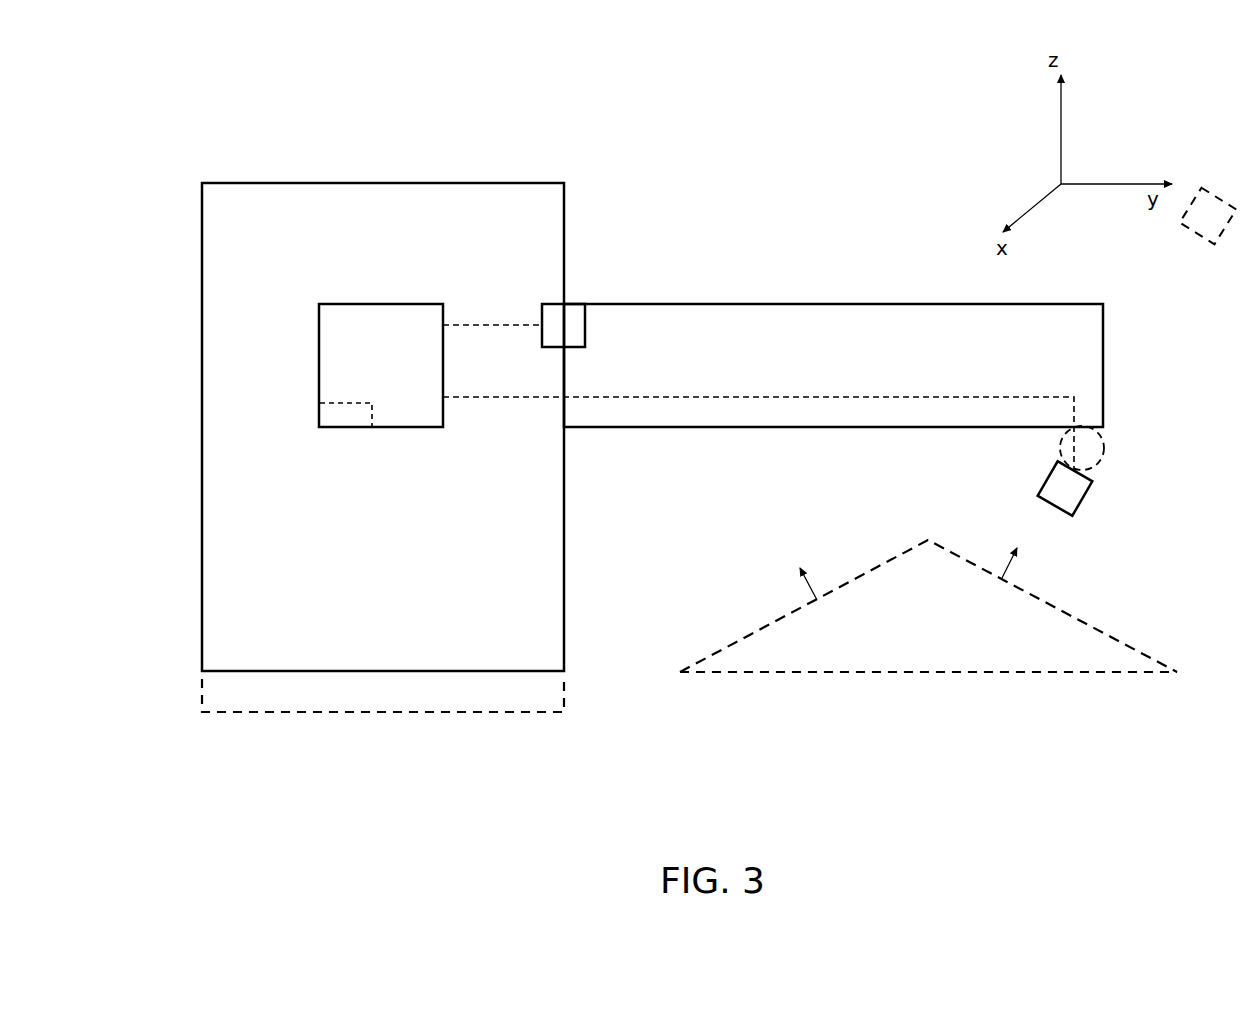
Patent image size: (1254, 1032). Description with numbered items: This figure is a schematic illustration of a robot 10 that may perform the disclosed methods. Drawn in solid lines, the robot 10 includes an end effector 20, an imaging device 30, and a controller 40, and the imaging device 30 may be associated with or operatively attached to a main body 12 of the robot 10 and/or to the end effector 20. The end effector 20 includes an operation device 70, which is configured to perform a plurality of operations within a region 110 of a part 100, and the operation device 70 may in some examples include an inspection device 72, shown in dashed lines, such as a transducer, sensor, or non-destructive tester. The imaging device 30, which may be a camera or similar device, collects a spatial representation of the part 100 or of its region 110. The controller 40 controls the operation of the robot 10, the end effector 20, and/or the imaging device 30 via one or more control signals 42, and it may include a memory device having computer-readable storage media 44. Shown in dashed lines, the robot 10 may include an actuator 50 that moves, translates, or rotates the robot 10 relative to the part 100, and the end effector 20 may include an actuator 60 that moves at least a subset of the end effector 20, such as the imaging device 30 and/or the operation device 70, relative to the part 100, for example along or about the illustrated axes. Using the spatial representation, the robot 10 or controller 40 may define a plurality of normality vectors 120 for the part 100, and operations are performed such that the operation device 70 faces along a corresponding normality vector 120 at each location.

The robot 10 is at (143, 115).
The main body 12 is at (348, 183).
The end effector 20 is at (787, 298).
The imaging device 30 is at (540, 307).
The controller 40 is at (319, 373).
The control signals 42 is at (530, 327).
The computer-readable storage media 44 is at (357, 413).
The actuator 50 is at (200, 690).
The actuator 60 is at (1102, 450).
The operation device 70 is at (1024, 484).
The inspection device 72 is at (1063, 493).
The part 100 is at (753, 632).
The region 110 is at (1143, 580).
The normality vectors 120 is at (810, 582).